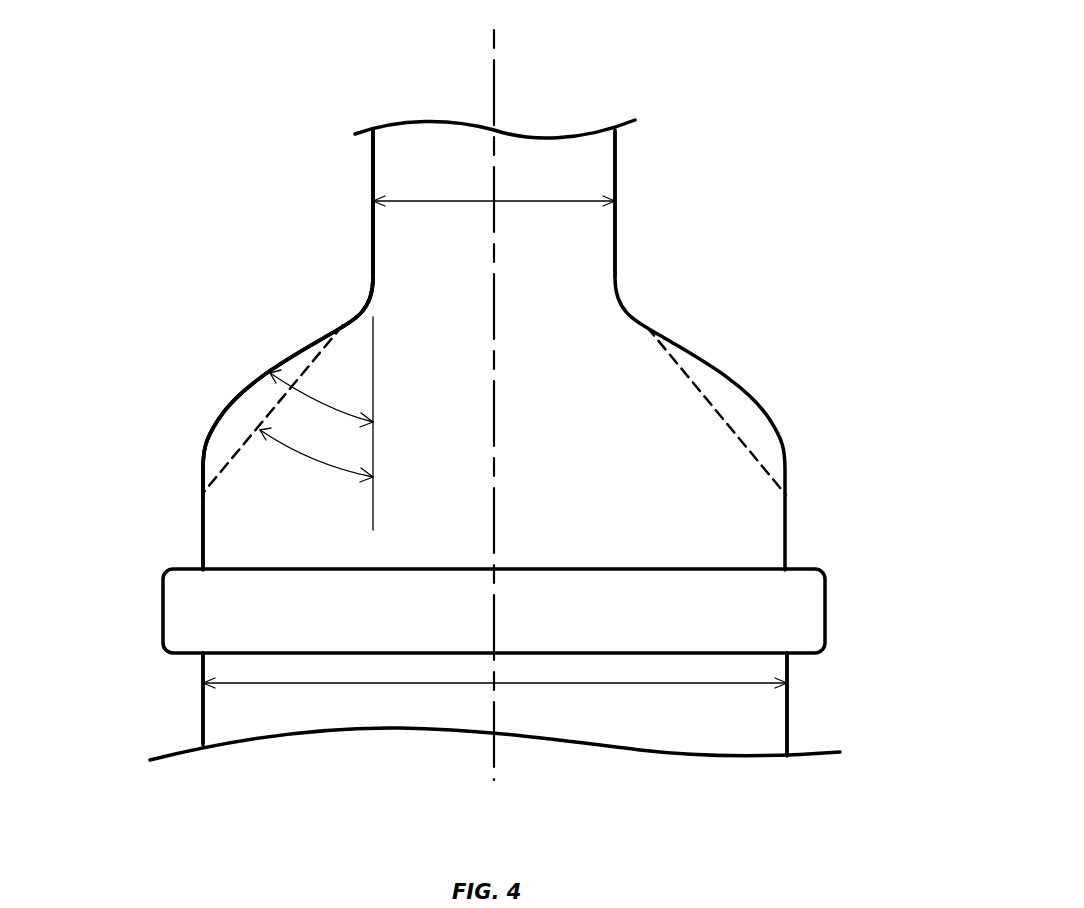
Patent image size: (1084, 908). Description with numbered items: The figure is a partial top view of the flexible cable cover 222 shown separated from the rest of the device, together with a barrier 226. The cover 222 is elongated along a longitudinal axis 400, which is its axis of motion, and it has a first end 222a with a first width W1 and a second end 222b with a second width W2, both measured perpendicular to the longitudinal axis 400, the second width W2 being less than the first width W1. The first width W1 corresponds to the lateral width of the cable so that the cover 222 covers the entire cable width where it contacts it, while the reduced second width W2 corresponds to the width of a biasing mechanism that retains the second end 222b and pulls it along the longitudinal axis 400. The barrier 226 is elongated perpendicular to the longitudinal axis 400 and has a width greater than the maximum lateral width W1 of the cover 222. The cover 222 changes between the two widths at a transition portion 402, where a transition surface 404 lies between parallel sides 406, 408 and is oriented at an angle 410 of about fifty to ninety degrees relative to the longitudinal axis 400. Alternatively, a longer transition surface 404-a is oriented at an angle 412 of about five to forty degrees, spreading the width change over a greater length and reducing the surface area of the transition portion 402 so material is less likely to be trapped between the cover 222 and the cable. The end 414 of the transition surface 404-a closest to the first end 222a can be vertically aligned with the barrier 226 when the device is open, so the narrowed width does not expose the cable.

The longitudinal axis 400 is at (494, 90).
The cover 222 is at (641, 478).
The first end 222a is at (760, 707).
The second end 222b is at (598, 160).
The barrier 226 is at (802, 600).
The transition portion 402 is at (135, 273).
The transition surface 404 is at (295, 353).
The transition surface 404-a is at (240, 450).
The parallel side 406 is at (373, 168).
The parallel side 408 is at (203, 540).
The angle 410 is at (312, 405).
The angle 412 is at (303, 460).
The end of the transition surface 414 is at (203, 498).
The first width W1 is at (657, 683).
The second width W2 is at (540, 201).